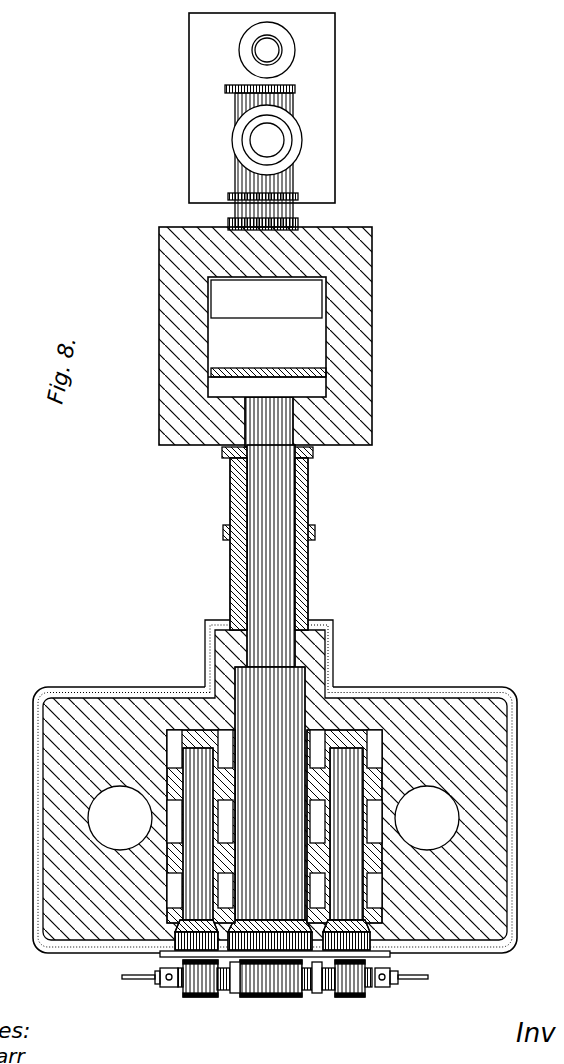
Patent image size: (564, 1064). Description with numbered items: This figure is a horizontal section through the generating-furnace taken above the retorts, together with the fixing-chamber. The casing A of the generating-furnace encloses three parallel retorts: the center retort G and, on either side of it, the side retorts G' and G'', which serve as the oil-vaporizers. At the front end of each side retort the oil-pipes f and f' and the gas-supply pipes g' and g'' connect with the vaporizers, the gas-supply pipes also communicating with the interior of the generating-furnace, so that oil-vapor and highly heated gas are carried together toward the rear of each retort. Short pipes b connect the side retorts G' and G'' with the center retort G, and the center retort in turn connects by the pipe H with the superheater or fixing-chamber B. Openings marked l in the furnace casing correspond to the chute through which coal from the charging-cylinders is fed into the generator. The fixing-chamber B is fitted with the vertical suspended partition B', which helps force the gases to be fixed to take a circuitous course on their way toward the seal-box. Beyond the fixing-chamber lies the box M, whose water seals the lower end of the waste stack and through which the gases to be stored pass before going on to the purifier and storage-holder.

The box M is at (262, 121).
The fixing-chamber B is at (274, 337).
The vertical suspended partition B' is at (267, 337).
The pipe H is at (275, 556).
The casing A is at (282, 786).
The chute l is at (273, 818).
The center retort G is at (270, 845).
The side retort G' is at (201, 878).
The side retort G'' is at (344, 878).
The short pipes b is at (276, 992).
The gas-supply pipe g' is at (169, 991).
The gas-supply pipe g'' is at (381, 990).
The oil-pipe f is at (130, 980).
The oil-pipe f' is at (413, 986).